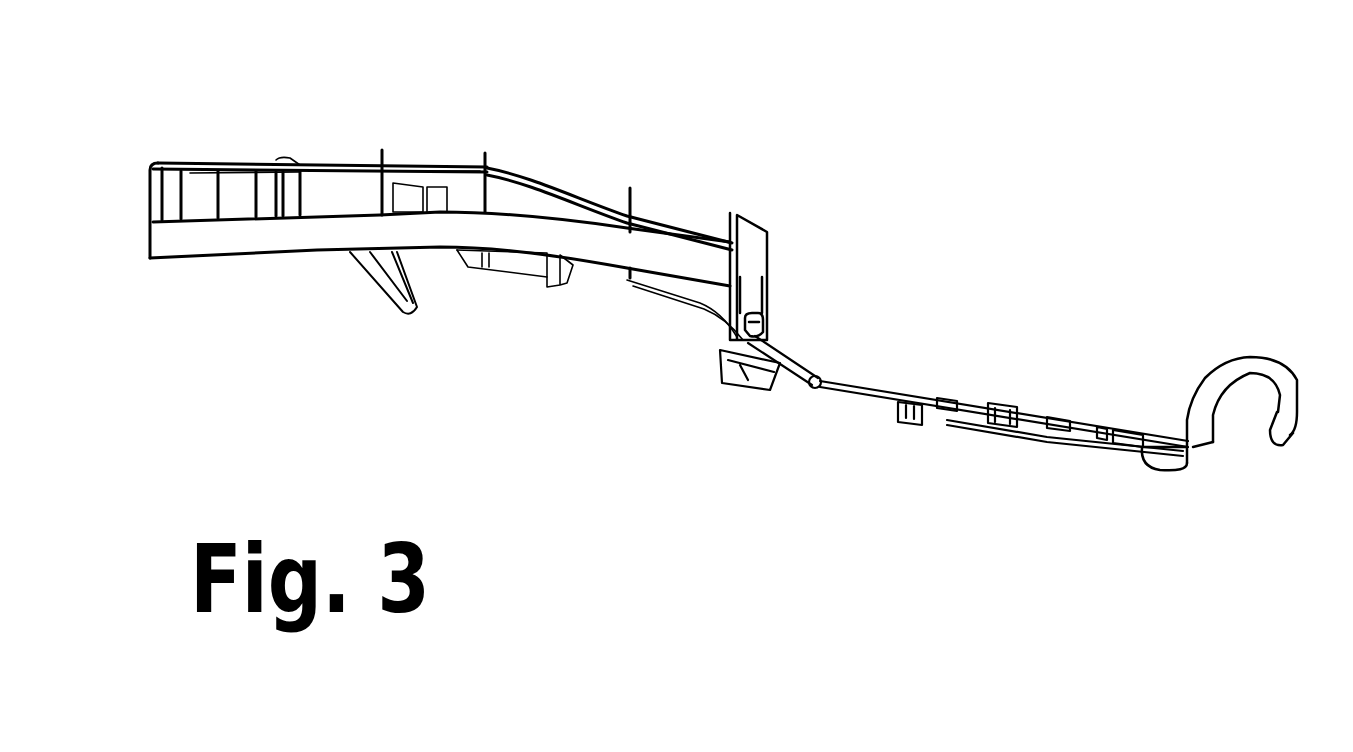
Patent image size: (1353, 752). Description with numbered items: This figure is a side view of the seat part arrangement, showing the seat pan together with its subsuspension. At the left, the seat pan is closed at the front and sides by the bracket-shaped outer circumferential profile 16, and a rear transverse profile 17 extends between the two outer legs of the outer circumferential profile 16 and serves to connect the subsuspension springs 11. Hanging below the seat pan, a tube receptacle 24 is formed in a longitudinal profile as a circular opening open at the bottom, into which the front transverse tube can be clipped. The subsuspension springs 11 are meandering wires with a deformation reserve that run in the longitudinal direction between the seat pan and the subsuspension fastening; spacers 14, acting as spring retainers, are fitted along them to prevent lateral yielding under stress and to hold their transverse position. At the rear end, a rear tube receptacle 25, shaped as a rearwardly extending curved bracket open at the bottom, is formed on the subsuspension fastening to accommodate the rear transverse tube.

The outer circumferential profile 16 is at (317, 240).
The tube receptacle 24 is at (417, 283).
The rear transverse profile 17 is at (753, 232).
The subsuspension spring 11 is at (860, 387).
The spacer 14 is at (998, 405).
The rear tube receptacle 25 is at (1243, 367).